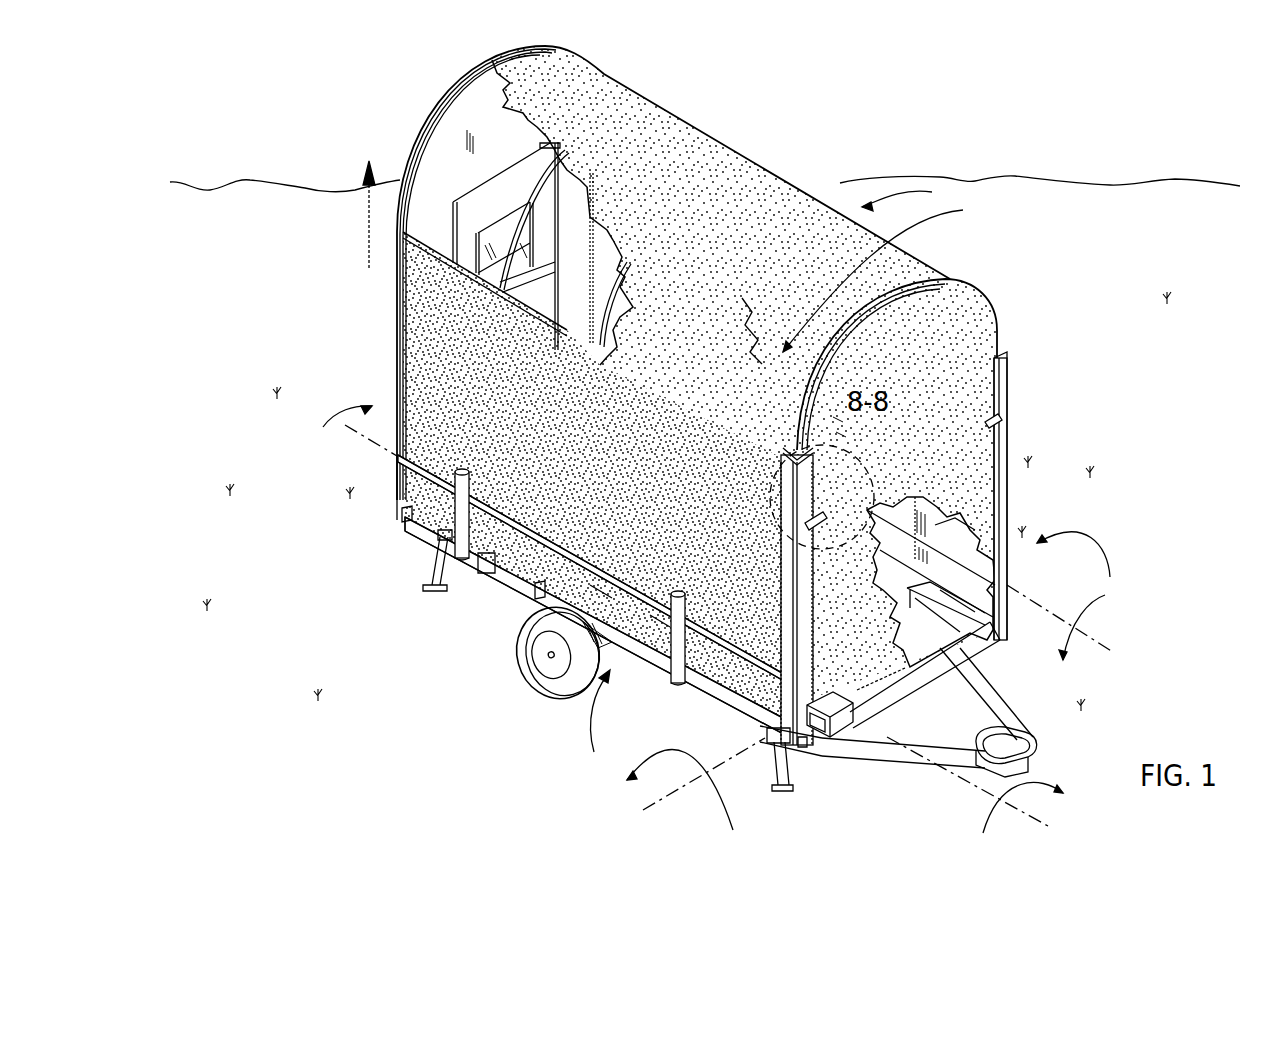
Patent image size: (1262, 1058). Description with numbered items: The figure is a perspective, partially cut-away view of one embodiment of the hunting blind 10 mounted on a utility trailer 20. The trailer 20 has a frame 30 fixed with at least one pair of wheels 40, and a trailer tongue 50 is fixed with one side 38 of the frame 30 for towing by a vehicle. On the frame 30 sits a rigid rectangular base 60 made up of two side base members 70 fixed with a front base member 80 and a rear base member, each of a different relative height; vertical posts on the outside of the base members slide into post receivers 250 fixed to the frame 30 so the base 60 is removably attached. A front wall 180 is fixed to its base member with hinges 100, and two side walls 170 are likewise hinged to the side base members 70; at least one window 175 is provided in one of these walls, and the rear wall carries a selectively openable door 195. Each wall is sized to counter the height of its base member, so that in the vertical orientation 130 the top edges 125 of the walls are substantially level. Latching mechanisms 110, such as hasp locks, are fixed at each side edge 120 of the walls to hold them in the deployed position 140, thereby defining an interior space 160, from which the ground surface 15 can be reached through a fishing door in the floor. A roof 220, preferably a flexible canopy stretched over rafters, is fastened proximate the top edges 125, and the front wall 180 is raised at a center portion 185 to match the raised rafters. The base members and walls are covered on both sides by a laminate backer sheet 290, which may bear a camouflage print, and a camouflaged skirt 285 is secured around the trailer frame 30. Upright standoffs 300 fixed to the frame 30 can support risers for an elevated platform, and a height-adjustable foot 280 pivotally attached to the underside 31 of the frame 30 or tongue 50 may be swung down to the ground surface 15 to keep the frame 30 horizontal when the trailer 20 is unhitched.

The hunting blind 10 is at (866, 96).
The ground surface 15 is at (376, 628).
The utility trailer 20 is at (601, 699).
The frame 30 is at (653, 658).
The underside 31 is at (777, 745).
The side of the frame 38 is at (907, 685).
The wheels 40 is at (553, 690).
The trailer tongue 50 is at (887, 758).
The rigid rectangular base 60 is at (901, 597).
The side base members 70 is at (939, 583).
The front base member 80 is at (885, 677).
The hinge 100 is at (905, 528).
The latching mechanisms 110 is at (1003, 418).
The side edge 120 is at (800, 573).
The top edges 125 is at (640, 372).
The vertical orientation 130 is at (368, 235).
The deployed position 140 is at (915, 196).
The interior space 160 is at (892, 277).
The side walls 170 is at (581, 441).
The window 175 is at (502, 228).
The front wall 180 is at (875, 657).
The center portion 185 is at (912, 290).
The door 195 is at (477, 210).
The roof 220 is at (710, 137).
The post receiver 250 is at (485, 568).
The height-adjustable foot 280 is at (780, 792).
The camouflaged skirt 285 is at (416, 520).
The laminate backer sheet 290 is at (423, 390).
The upright standoffs 300 is at (485, 495).